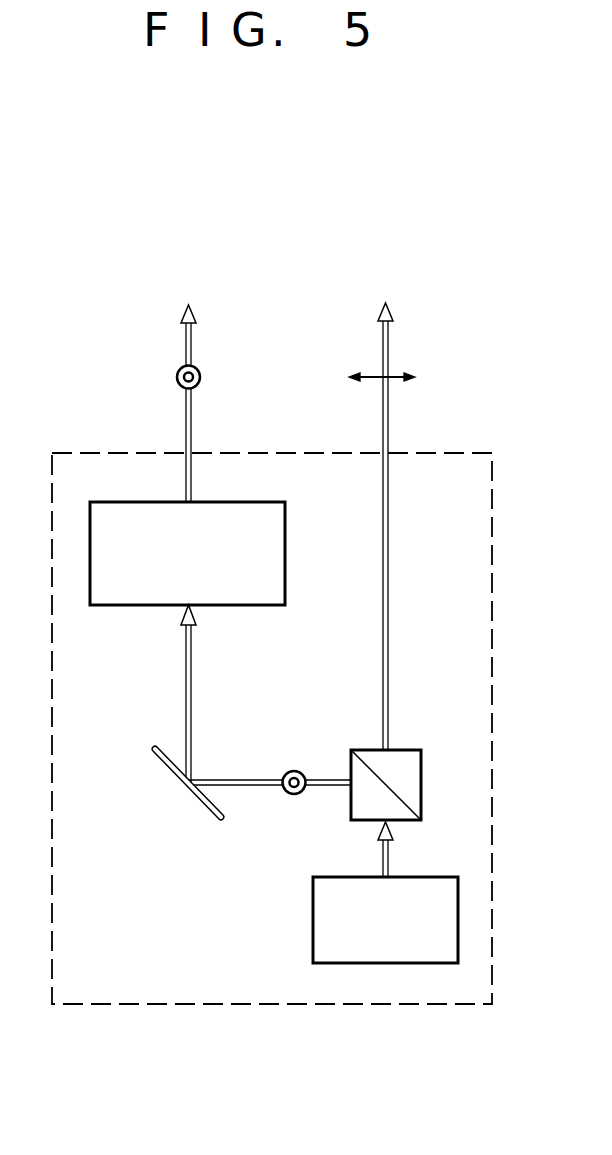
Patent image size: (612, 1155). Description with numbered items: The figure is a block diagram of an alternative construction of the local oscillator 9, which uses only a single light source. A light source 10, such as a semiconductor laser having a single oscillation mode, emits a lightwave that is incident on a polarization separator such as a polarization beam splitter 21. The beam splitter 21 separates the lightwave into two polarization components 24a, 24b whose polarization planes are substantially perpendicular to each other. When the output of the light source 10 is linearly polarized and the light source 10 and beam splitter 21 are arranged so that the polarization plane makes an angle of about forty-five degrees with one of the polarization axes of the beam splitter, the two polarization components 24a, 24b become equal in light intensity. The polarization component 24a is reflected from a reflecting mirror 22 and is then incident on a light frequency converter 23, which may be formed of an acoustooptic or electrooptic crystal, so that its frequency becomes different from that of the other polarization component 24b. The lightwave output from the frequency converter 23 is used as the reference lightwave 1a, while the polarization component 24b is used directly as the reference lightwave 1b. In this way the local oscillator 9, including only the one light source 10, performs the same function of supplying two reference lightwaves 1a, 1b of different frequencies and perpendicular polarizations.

The reference lightwave 1a is at (177, 372).
The reference lightwave 1b is at (412, 368).
The local oscillator 9 is at (93, 1008).
The light source 10 is at (313, 942).
The polarization separator 21 is at (422, 748).
The reflecting mirror 22 is at (178, 787).
The light frequency converter 23 is at (287, 512).
The polarization component 24a is at (233, 778).
The polarization component 24b is at (389, 603).